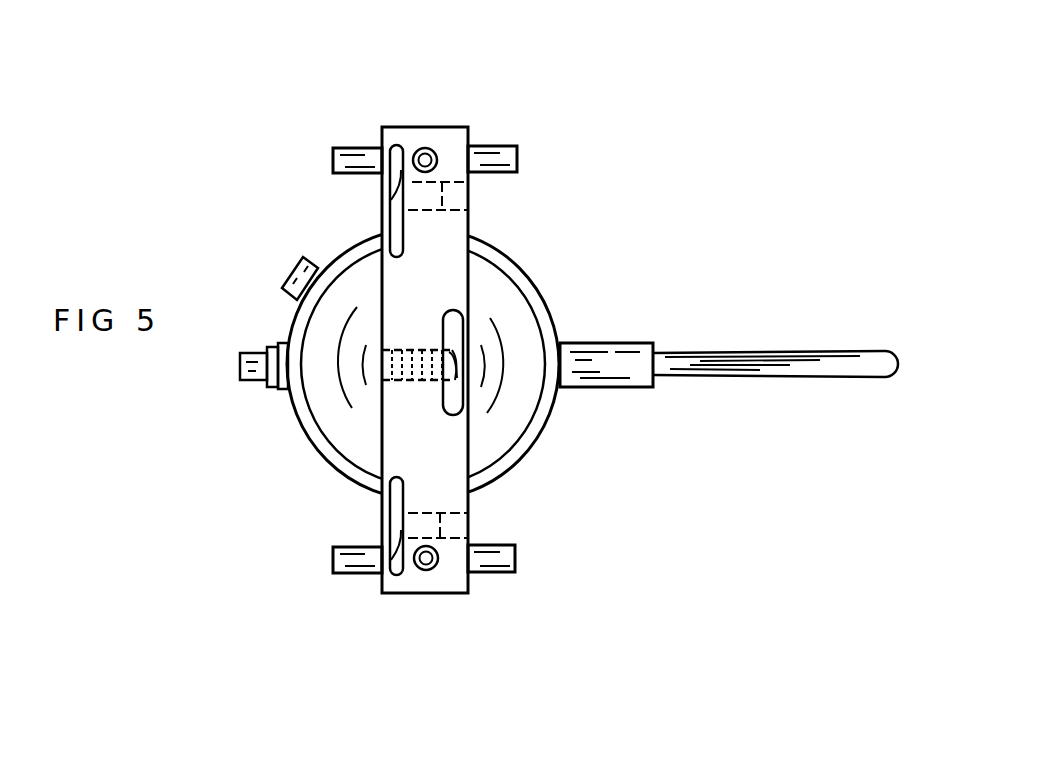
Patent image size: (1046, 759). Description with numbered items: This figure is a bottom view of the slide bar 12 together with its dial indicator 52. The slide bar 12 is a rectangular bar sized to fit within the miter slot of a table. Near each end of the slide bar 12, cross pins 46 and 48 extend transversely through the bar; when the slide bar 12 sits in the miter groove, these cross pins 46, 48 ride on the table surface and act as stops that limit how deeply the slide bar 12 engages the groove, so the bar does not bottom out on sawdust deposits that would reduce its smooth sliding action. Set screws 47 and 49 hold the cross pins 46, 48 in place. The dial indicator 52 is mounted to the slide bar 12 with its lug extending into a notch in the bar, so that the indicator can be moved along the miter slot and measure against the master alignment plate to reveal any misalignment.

The slide bar 12 is at (468, 127).
The cross pin 46 is at (340, 573).
The set screw 47 is at (430, 569).
The cross pin 48 is at (352, 140).
The set screw 49 is at (425, 148).
The dial indicator 52 is at (537, 278).